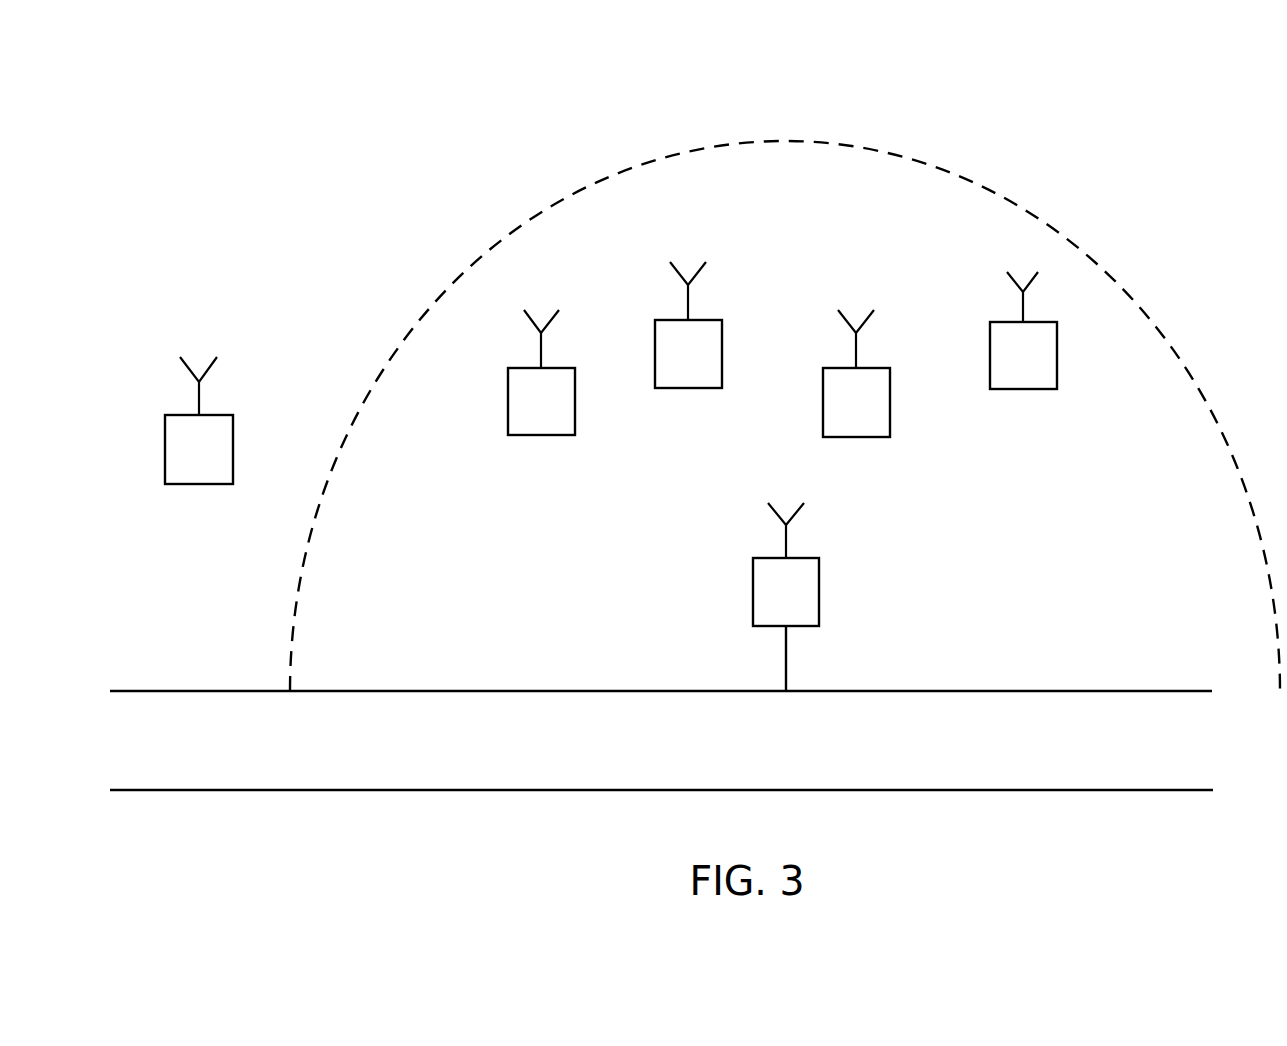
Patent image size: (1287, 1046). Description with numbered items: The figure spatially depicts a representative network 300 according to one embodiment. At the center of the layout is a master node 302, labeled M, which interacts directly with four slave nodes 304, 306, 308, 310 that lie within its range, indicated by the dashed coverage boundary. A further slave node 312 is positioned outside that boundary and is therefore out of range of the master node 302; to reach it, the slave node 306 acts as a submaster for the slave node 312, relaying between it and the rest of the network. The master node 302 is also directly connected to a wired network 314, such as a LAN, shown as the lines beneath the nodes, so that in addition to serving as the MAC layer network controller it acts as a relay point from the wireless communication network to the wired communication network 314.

The network 300 is at (535, 157).
The master node 302 is at (753, 590).
The slave node 304 is at (655, 352).
The slave node 306 is at (508, 400).
The slave node 308 is at (823, 400).
The slave node 310 is at (990, 352).
The slave node 312 is at (165, 448).
The wired network 314 is at (1060, 690).